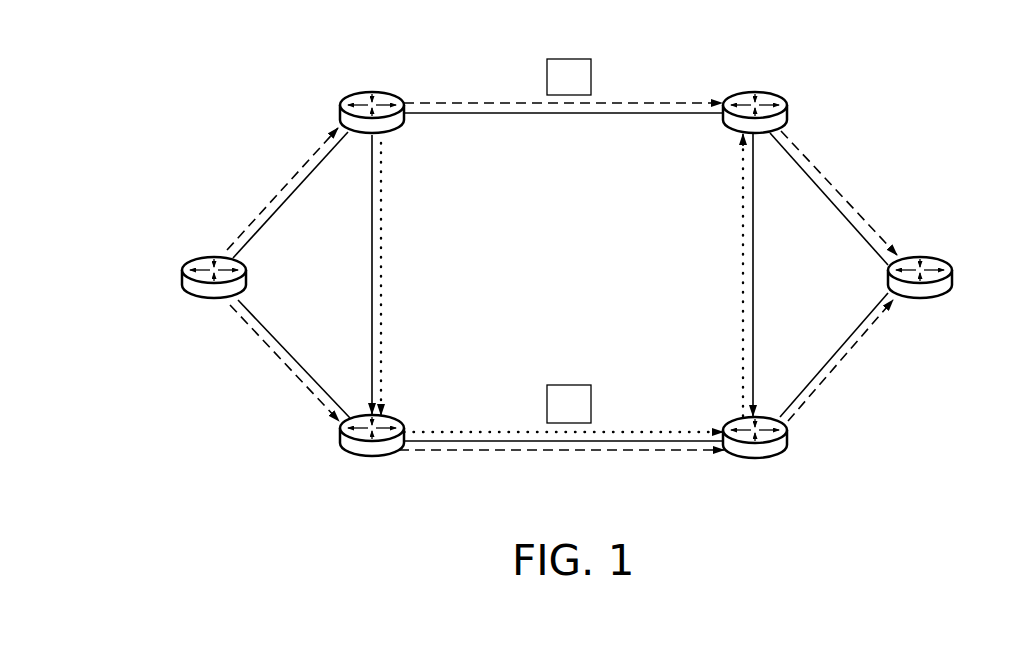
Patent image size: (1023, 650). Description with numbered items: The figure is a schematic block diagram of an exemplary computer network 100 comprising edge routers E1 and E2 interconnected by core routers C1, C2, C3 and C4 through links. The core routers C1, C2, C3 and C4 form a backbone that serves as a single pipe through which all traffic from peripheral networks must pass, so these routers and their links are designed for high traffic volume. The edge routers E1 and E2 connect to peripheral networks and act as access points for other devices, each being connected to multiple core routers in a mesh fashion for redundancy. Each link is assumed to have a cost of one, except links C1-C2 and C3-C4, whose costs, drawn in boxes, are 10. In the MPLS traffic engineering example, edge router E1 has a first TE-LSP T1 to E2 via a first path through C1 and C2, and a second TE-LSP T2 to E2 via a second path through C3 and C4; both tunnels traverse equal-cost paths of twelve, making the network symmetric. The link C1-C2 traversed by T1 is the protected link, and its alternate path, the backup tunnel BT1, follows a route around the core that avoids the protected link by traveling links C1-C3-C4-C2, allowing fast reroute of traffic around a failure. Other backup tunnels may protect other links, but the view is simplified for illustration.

The computer network 100 is at (230, 79).
The core router C1 is at (372, 89).
The core router C2 is at (755, 89).
The core router C3 is at (372, 459).
The core router C4 is at (755, 460).
The edge router E1 is at (193, 293).
The edge router E2 is at (944, 294).
The first TE-LSP T1 is at (284, 181).
The second TE-LSP T2 is at (280, 374).
The backup tunnel BT1 is at (387, 254).
The link cost 10 is at (569, 241).